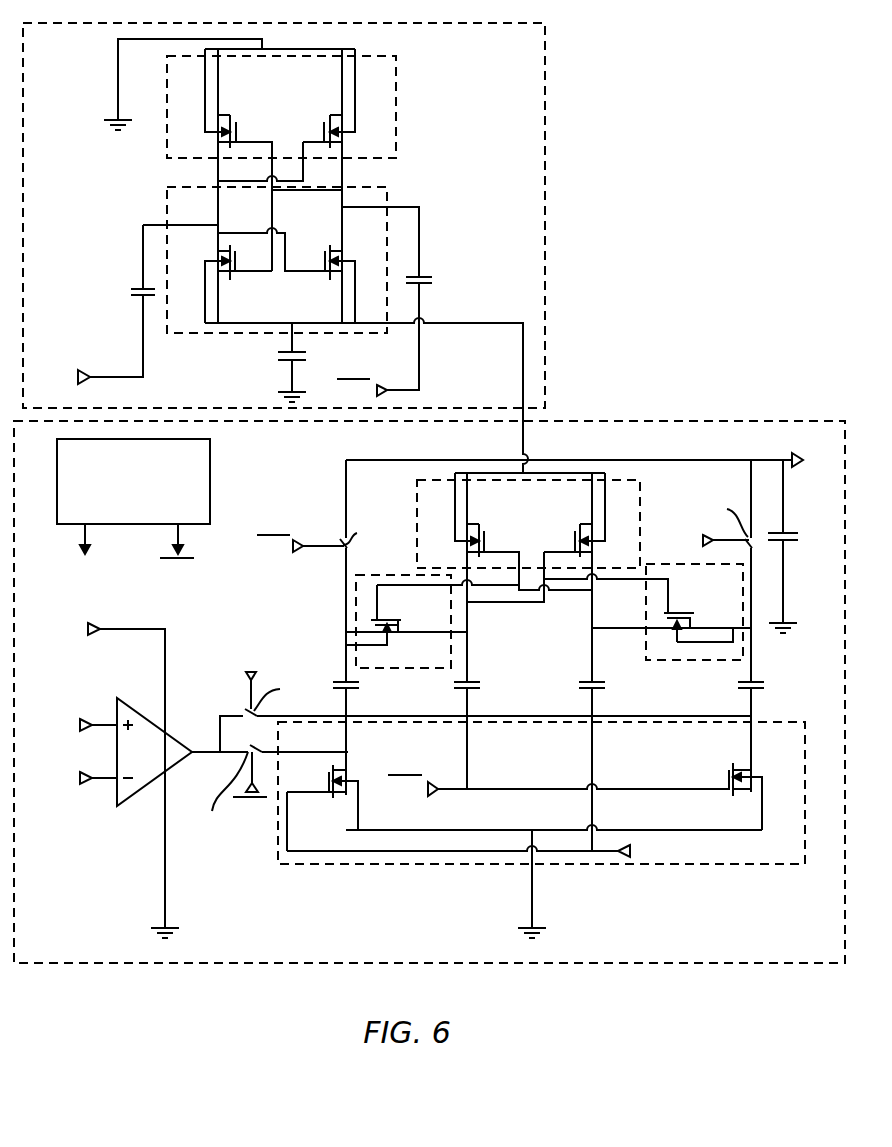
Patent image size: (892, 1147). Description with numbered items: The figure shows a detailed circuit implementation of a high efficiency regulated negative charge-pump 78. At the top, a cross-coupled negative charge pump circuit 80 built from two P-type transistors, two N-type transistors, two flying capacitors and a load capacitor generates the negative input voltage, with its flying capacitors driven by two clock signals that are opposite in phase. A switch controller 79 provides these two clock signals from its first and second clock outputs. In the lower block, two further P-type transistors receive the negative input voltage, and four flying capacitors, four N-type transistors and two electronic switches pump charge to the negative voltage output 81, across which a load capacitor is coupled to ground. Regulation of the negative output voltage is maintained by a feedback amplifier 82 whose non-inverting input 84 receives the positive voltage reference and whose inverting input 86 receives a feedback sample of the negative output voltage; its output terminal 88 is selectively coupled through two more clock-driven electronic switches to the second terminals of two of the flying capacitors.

The high efficiency regulated negative charge-pump 78 is at (822, 943).
The switch controller 79 is at (123, 513).
The cross-coupled negative charge pump circuit 80 is at (516, 62).
The negative voltage output 81 is at (801, 469).
The feedback amplifier 82 is at (157, 762).
The non-inverting input 84 is at (107, 723).
The inverting input 86 is at (107, 781).
The output terminal 88 is at (205, 755).